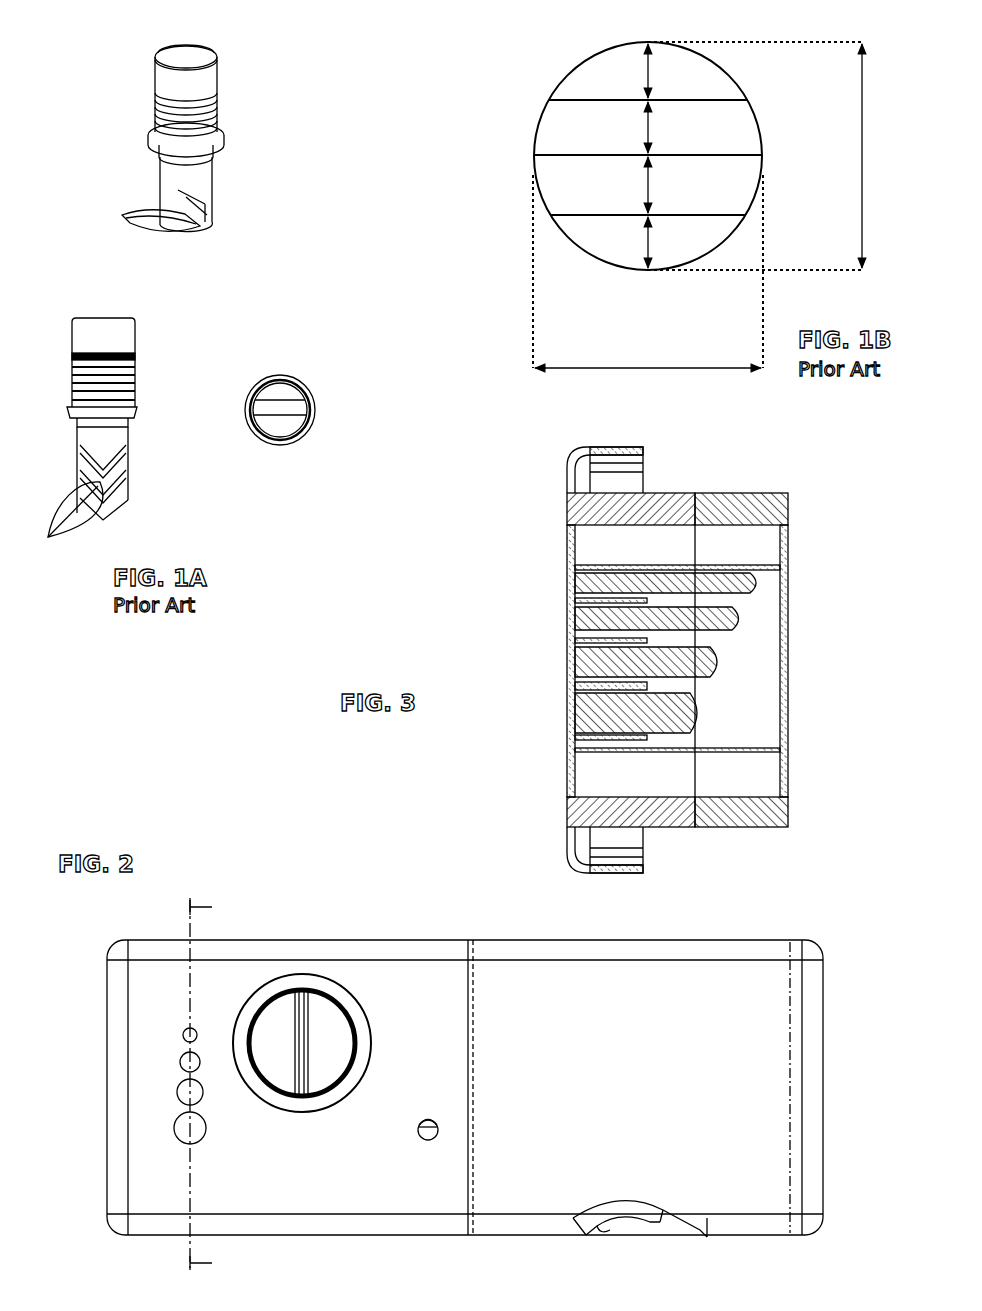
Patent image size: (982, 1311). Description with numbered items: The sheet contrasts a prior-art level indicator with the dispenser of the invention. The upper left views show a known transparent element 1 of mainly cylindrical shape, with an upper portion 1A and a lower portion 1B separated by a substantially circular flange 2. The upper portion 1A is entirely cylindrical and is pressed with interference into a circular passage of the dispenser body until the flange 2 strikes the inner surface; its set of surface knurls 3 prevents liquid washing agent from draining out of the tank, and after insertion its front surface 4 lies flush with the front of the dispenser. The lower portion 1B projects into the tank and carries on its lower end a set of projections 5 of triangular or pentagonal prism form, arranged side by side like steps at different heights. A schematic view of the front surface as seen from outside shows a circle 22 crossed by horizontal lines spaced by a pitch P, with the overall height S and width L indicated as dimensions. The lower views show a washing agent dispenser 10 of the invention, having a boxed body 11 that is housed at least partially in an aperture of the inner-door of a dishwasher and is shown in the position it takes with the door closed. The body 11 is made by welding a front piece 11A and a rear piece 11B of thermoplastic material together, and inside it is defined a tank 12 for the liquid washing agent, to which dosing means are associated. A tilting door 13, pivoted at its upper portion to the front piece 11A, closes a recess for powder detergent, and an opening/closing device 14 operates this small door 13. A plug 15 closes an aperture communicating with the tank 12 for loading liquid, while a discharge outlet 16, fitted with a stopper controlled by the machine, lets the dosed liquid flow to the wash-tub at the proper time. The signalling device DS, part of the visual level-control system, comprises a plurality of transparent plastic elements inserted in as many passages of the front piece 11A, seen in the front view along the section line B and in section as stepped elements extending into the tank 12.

In FIG. 1A, the transparent element 1 is at (268, 110).
In FIG. 1A, the upper portion 1A is at (146, 74).
In FIG. 1A, the lower portion 1B is at (146, 175).
In FIG. 1A, the circular flange 2 is at (222, 146).
In FIG. 1A, the surface knurls 3 is at (160, 108).
In FIG. 1A, the front surface 4 is at (187, 56).
In FIG. 1A, the projections 5 is at (160, 211).
In FIG. 1B, the circular cross-section 22 is at (572, 72).
In FIG. 1B, the pitch spacing P is at (660, 156).
In FIG. 1B, the span dimension S is at (771, 156).
In FIG. 1B, the length dimension L is at (648, 290).
In FIG. 3, the washing agent dispenser 10 is at (628, 669).
In FIG. 2, the washing agent dispenser 10 is at (459, 1074).
In FIG. 3, the boxed body 11 is at (663, 669).
In FIG. 2, the boxed body 11 is at (432, 936).
In FIG. 3, the front piece 11A is at (567, 505).
In FIG. 3, the rear piece 11B is at (742, 497).
In FIG. 3, the tank 12 is at (762, 714).
In FIG. 2, the tilting door 13 is at (730, 1122).
In FIG. 2, the opening/closing device 14 is at (620, 1229).
In FIG. 2, the plug 15 is at (320, 1018).
In FIG. 2, the discharge outlet 16 is at (430, 1142).
In FIG. 3, the signalling device DS is at (556, 580).
In FIG. 2, the signalling device DS is at (170, 1125).
In FIG. 2, the section line B is at (207, 1082).